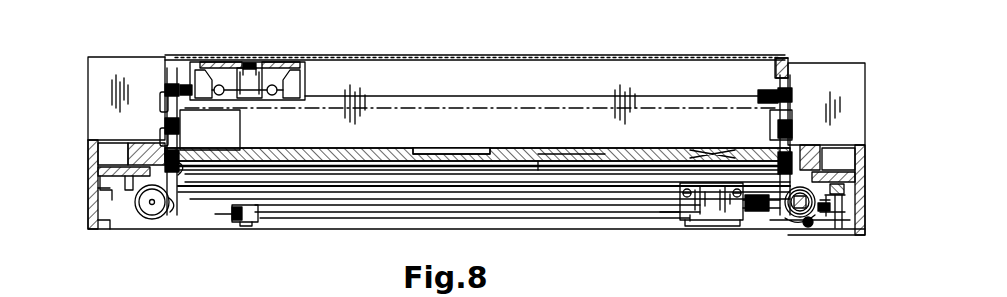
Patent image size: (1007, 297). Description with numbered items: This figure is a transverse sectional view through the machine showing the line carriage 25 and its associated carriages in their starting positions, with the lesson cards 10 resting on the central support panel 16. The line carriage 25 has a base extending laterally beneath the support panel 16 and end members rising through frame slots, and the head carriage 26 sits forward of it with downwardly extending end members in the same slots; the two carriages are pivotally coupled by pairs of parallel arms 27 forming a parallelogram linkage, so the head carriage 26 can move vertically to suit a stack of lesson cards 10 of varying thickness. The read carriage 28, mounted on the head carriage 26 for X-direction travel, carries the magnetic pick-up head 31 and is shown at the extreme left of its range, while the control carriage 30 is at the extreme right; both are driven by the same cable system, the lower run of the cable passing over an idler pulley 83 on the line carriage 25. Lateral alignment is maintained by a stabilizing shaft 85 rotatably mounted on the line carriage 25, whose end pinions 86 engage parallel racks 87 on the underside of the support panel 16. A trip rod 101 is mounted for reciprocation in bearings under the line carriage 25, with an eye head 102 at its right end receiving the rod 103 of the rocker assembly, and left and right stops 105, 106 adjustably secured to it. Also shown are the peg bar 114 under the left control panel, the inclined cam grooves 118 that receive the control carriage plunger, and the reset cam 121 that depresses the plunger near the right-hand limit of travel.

The lesson cards 10 is at (448, 122).
The central support panel 16 is at (369, 148).
The line carriage 25 is at (343, 190).
The head carriage 26 is at (430, 56).
The parallel arms 27 is at (793, 110).
The read carriage 28 is at (272, 62).
The control carriage 30 is at (696, 220).
The magnetic pick-up head 31 is at (238, 78).
The idler pulley 83 is at (157, 208).
The stabilizing shaft 85 is at (540, 170).
The pinions 86 is at (760, 150).
The racks 87 is at (207, 147).
The trip rod 101 is at (497, 218).
The eye head 102 is at (814, 228).
The rod 103 is at (822, 224).
The left stop 105 is at (235, 222).
The right stop 106 is at (762, 222).
The peg bar 114 is at (138, 200).
The cam grooves 118 is at (493, 150).
The reset cam 121 is at (703, 150).